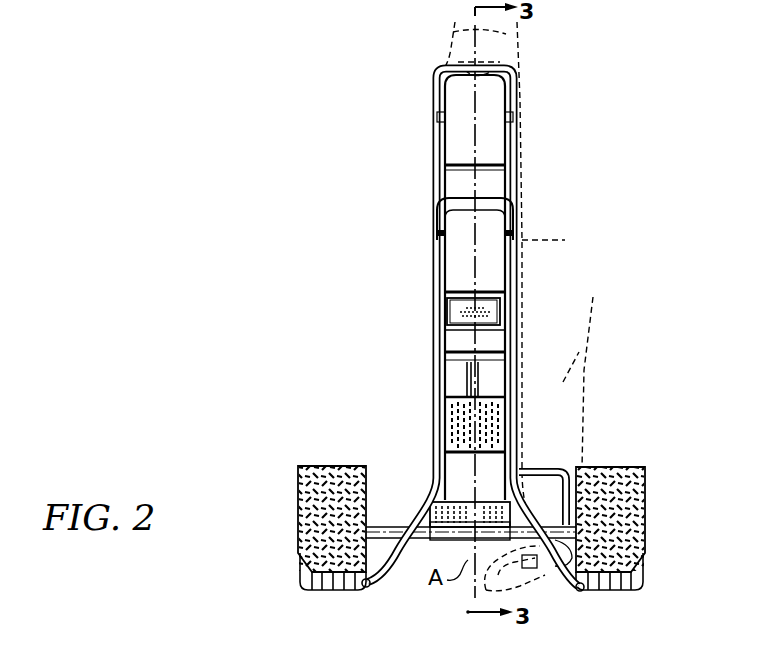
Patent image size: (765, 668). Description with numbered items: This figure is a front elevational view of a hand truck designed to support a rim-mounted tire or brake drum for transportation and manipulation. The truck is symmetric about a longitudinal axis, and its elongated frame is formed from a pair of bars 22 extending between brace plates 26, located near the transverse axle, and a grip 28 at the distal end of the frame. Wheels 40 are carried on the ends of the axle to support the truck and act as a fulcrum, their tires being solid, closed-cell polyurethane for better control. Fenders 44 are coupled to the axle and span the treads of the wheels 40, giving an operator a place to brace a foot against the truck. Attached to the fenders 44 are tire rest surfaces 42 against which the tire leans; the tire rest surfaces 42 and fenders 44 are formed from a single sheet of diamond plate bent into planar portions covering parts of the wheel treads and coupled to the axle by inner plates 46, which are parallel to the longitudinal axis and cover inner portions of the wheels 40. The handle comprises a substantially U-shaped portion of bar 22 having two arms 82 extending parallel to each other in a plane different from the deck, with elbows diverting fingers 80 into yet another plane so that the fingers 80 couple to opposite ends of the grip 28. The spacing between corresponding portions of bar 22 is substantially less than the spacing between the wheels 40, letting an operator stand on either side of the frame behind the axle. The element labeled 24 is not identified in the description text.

The bar 22 is at (433, 290).
The support bracket 24 is at (465, 200).
The brace plate 26 is at (452, 405).
The grip 28 is at (434, 70).
The wheel 40 is at (318, 590).
The tire rest surface 42 is at (299, 491).
The fender 44 is at (318, 466).
The inner plate 46 is at (367, 485).
The finger 80 is at (433, 100).
The arm 82 is at (433, 136).